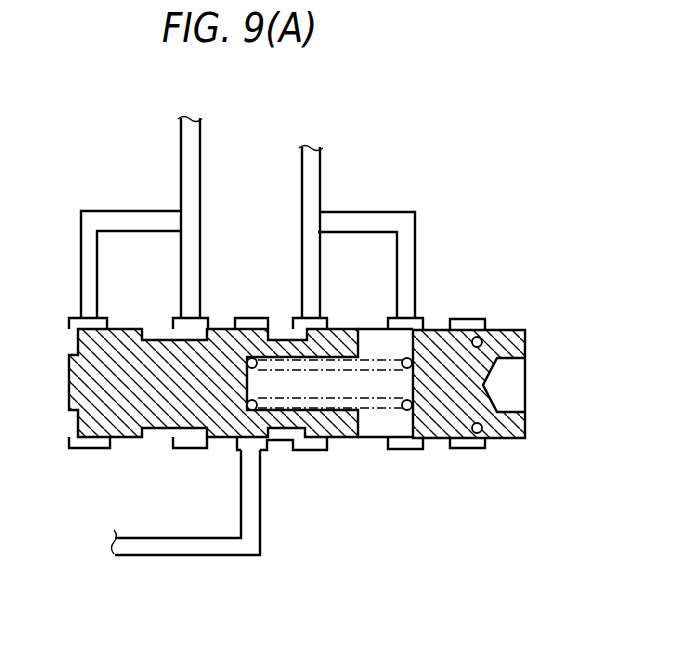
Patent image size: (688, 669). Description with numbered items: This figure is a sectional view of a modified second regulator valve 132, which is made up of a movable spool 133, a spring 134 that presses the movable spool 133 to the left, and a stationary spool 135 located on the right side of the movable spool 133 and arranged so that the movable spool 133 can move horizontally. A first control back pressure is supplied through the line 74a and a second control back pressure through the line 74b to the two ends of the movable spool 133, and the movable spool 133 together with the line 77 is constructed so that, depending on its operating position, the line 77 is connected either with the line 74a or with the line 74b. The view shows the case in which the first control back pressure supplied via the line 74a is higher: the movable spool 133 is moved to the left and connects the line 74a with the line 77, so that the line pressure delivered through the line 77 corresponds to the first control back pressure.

The second regulator valve 132 is at (435, 190).
The movable spool 133 is at (123, 430).
The spring 134 is at (367, 440).
The stationary spool 135 is at (441, 425).
The line 74a is at (312, 175).
The line 74b is at (190, 168).
The line 77 is at (188, 545).